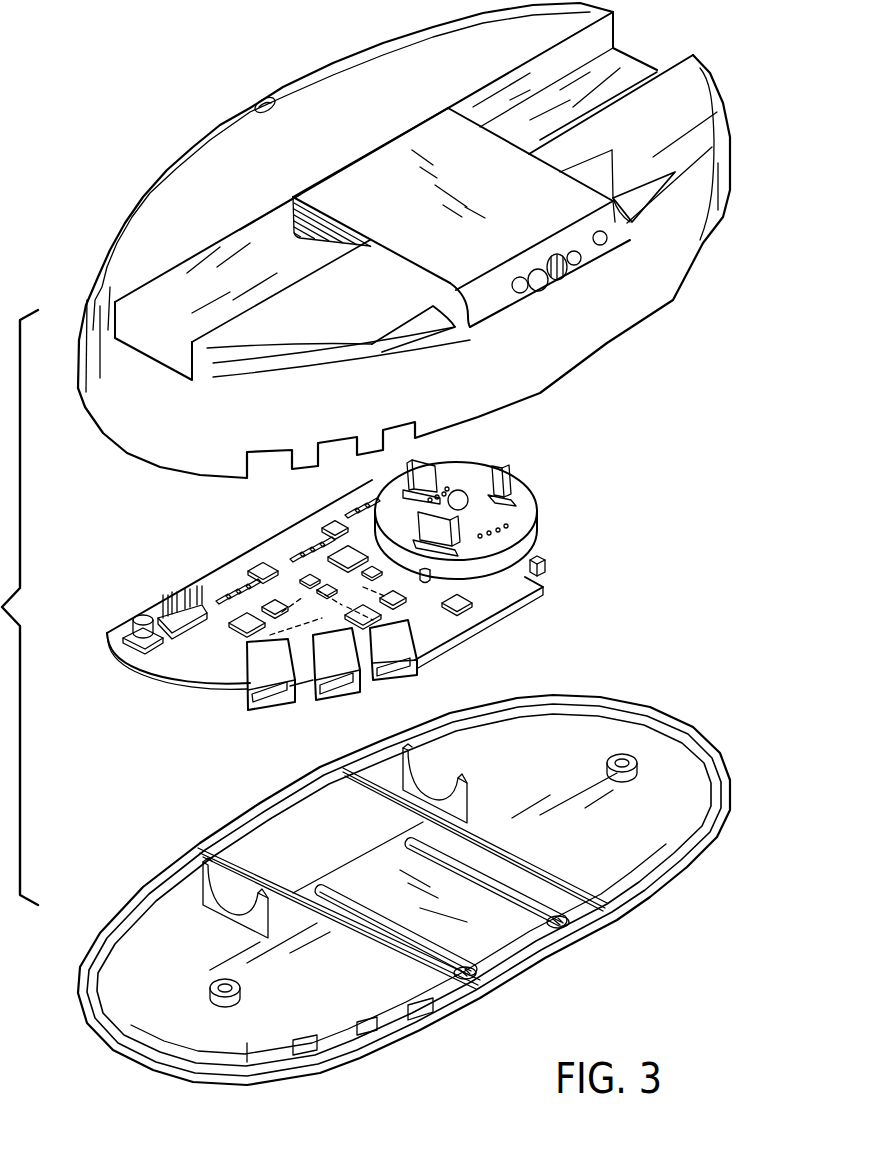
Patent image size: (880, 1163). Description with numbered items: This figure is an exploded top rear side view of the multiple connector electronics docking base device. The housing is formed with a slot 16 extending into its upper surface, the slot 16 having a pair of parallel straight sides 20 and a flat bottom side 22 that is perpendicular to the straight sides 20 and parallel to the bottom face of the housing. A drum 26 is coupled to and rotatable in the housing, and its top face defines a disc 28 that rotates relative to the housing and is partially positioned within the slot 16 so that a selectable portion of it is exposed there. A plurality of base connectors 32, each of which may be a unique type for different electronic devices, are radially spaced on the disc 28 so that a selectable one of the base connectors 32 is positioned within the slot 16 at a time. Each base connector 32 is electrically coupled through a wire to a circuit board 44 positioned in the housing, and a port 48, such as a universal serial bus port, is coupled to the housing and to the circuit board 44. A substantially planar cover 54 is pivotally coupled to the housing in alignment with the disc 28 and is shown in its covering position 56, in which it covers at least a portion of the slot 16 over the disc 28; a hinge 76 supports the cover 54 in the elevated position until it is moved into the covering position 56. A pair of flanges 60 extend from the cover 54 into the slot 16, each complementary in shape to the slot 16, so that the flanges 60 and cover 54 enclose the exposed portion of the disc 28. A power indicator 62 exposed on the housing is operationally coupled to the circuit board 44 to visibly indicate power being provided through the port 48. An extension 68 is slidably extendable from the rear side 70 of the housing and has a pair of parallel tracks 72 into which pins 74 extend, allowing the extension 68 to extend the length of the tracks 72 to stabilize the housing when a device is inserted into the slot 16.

The slot 16 is at (280, 250).
The straight sides 20 is at (142, 290).
The flat bottom side 22 is at (163, 350).
The drum 26 is at (515, 497).
The disc 28 is at (522, 507).
The base connectors 32 is at (427, 457).
The circuit board 44 is at (223, 574).
The port 48 is at (244, 703).
The cover 54 is at (410, 117).
The covering position 56 is at (573, 160).
The flanges 60 is at (262, 247).
The power indicator 62 is at (264, 98).
The extension 68 is at (528, 960).
The rear side 70 is at (409, 892).
The tracks 72 is at (510, 898).
The pins 74 is at (557, 920).
The hinge 76 is at (577, 283).